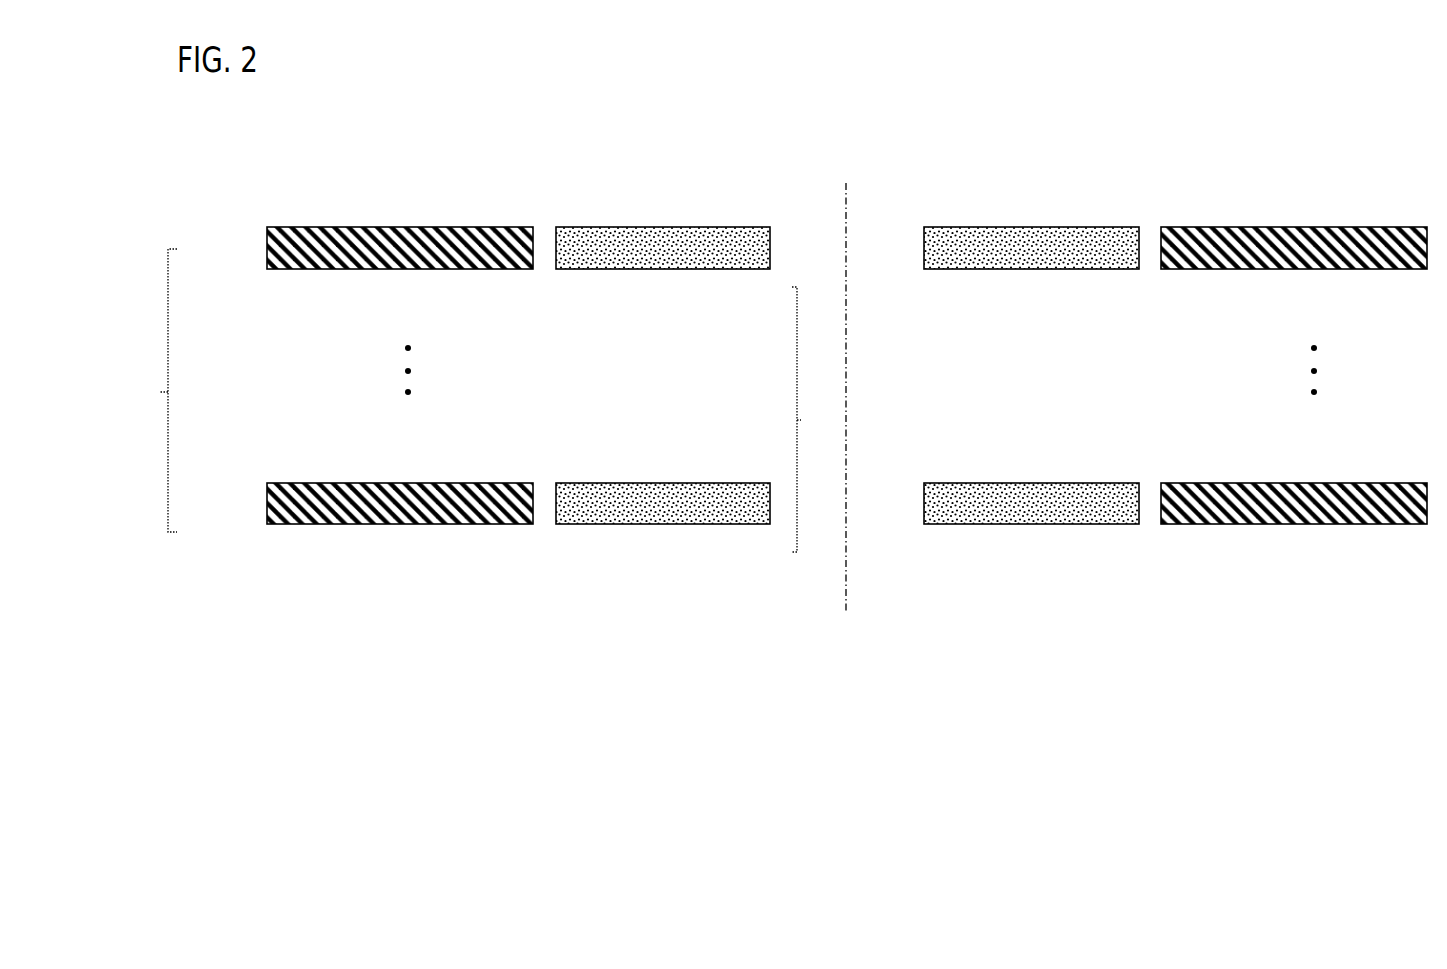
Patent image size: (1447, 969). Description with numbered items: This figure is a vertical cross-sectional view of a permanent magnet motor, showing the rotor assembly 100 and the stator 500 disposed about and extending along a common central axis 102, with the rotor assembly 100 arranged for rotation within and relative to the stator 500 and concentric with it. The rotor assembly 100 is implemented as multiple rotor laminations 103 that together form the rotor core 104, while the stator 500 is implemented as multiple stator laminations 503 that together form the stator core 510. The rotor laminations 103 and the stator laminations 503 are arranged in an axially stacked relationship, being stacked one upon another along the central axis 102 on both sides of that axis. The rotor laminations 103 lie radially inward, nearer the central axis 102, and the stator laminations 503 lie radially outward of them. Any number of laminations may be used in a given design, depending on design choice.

The rotor assembly 100 is at (958, 566).
The central axis 102 is at (848, 191).
The rotor laminations 103 is at (728, 270).
The rotor core 104 is at (813, 419).
The stator 500 is at (809, 421).
The stator laminations 503 is at (267, 245).
The stator core 510 is at (142, 390).